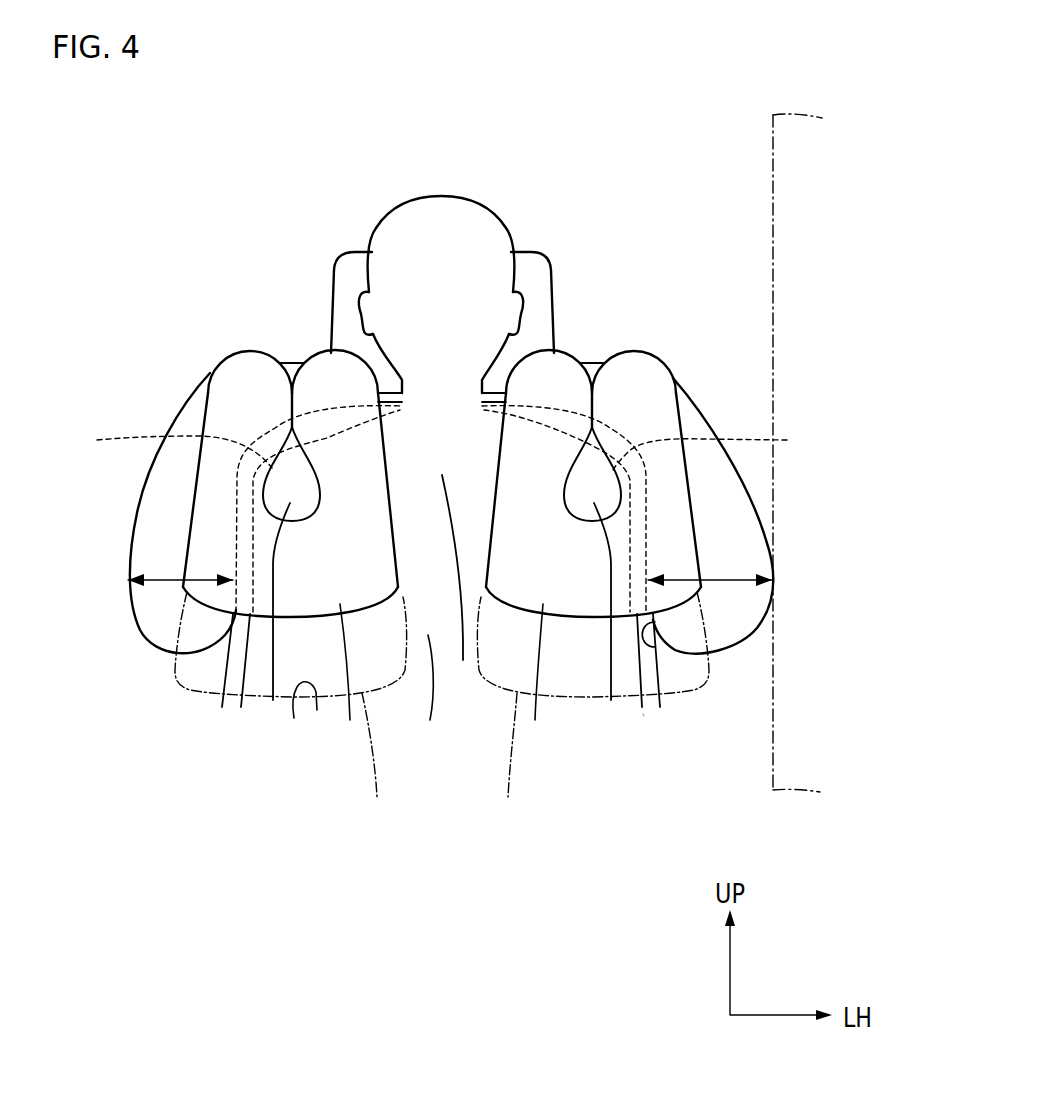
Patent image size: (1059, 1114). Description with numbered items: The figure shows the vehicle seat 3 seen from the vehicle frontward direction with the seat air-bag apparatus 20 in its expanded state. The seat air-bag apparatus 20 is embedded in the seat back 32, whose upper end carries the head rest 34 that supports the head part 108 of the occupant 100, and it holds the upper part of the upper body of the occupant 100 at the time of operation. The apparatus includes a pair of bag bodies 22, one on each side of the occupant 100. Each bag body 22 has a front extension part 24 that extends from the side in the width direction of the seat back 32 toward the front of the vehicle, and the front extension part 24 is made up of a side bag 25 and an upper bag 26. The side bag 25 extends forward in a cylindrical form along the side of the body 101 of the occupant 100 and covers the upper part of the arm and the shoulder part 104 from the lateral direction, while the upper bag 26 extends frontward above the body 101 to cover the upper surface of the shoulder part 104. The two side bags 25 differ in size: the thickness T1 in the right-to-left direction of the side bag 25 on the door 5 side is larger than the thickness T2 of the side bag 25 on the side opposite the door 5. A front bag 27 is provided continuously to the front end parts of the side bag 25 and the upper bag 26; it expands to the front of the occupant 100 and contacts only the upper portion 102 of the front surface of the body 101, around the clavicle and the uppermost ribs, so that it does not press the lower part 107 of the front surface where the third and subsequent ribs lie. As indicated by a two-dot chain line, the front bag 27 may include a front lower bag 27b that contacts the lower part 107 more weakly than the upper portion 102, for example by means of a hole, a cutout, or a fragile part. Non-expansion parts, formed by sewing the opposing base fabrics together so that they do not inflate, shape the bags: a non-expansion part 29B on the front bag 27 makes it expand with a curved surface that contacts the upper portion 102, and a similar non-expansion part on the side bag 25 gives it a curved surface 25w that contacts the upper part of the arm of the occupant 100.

The vehicle seat 3 is at (558, 284).
The door 5 is at (766, 195).
The seat air-bag apparatus 20 is at (682, 362).
The bag bodies 22 is at (208, 375).
The front extension part 24 is at (440, 572).
The side bag 25 is at (152, 643).
The curved surface 25w is at (655, 644).
The upper bag 26 is at (317, 353).
The front bag 27 is at (350, 720).
The front lower bag 27b is at (438, 761).
The non-expansion part 29B is at (273, 700).
The seat back 32 is at (657, 673).
The head rest 34 is at (525, 264).
The occupant 100 is at (648, 728).
The body 101 is at (294, 718).
The upper portion 102 is at (463, 660).
The shoulder part 104 is at (442, 509).
The lower part 107 is at (430, 720).
The head of occupant 108 is at (441, 196).
The thickness T1 is at (730, 578).
The thickness T2 is at (153, 578).